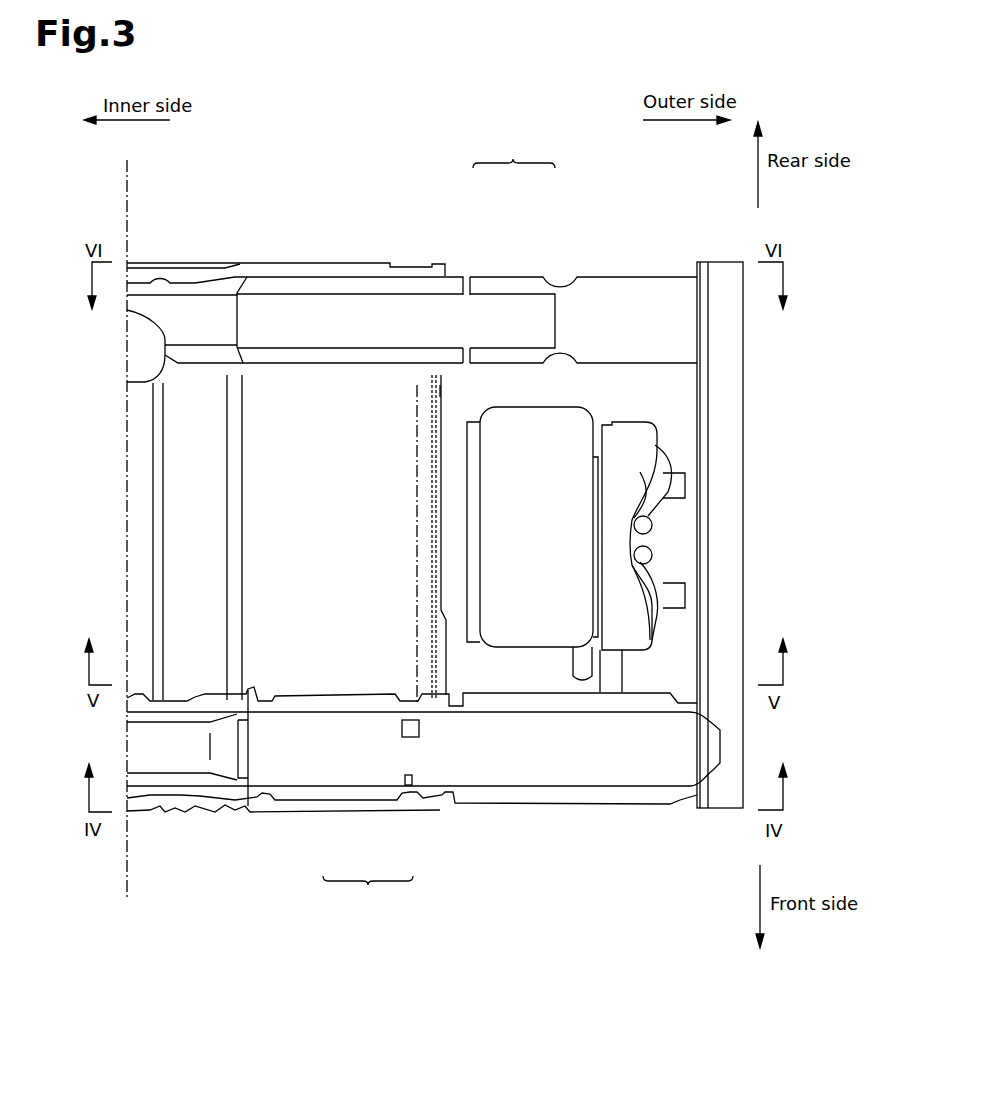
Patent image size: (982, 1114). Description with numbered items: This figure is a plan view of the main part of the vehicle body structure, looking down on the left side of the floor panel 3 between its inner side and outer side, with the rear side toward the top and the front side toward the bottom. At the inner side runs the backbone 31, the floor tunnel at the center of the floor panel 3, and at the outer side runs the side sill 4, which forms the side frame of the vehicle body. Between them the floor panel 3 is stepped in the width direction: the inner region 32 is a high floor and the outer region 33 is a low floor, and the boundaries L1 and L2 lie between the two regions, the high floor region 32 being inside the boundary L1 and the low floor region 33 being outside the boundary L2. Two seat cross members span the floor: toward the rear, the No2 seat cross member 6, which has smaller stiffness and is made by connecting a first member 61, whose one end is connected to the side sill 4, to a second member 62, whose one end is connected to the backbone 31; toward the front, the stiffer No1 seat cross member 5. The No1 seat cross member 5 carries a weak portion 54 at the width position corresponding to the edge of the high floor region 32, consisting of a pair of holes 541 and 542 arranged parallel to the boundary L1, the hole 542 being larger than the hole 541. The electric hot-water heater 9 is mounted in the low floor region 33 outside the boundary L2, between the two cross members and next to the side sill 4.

The floor panel 3 is at (116, 519).
The backbone 31 is at (131, 432).
The inner region 32 is at (313, 380).
The outer region 33 is at (625, 383).
The side sill 4 is at (727, 452).
The No1 seat cross member 5 is at (502, 768).
The No2 seat cross member 6 is at (514, 151).
The first member 61 is at (590, 288).
The second member 62 is at (445, 285).
The electric hot-water heater 9 is at (570, 440).
The weak portion 54 is at (368, 891).
The hole 541 is at (408, 787).
The hole 542 is at (400, 729).
The boundary L1 is at (417, 386).
The boundary L2 is at (440, 386).